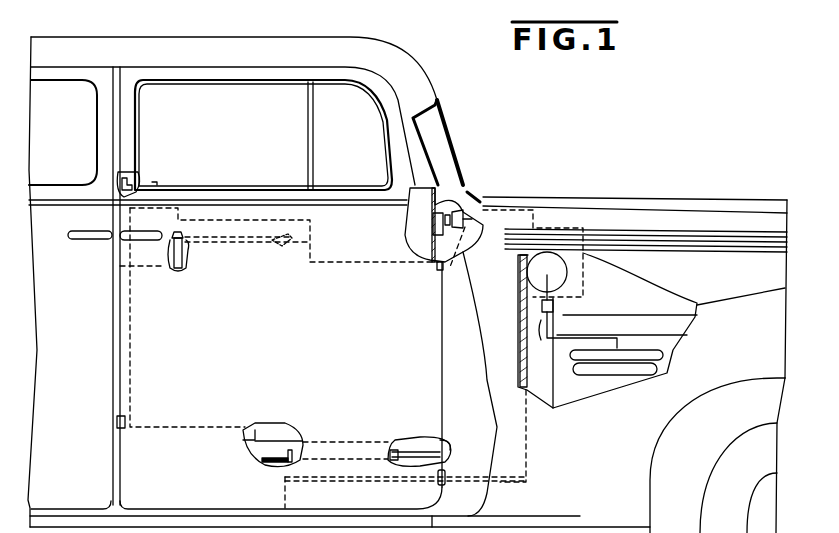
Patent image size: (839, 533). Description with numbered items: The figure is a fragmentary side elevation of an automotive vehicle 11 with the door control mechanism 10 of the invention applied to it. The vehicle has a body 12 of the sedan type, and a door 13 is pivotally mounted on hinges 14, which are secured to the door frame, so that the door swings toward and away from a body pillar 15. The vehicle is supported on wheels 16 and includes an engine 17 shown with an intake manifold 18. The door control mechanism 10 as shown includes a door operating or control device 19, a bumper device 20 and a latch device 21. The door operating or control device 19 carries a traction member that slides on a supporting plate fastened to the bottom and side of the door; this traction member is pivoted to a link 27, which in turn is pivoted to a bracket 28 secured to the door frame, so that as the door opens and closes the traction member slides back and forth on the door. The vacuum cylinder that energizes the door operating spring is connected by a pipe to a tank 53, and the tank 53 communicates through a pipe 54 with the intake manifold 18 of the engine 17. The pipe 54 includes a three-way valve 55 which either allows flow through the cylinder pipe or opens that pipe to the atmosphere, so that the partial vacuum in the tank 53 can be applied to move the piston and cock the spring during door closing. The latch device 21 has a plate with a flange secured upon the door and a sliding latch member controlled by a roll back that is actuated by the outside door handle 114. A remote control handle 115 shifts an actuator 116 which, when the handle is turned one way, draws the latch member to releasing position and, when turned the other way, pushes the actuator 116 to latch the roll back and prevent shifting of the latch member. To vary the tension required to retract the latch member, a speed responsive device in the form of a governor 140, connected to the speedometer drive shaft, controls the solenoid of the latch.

The door control mechanism 10 is at (168, 352).
The automotive vehicle 11 is at (418, 64).
The body 12 is at (583, 200).
The door 13 is at (407, 172).
The hinge 14 is at (437, 269).
The body pillar 15 is at (118, 68).
The wheel 16 is at (768, 456).
The engine 17 is at (592, 320).
The intake manifold 18 is at (648, 350).
The door operating or control device 19 is at (272, 452).
The bumper device 20 is at (132, 178).
The latch device 21 is at (188, 268).
The link 27 is at (412, 450).
The bracket 28 is at (442, 440).
The tank 53 is at (537, 271).
The pipe 54 is at (558, 325).
The three-way valve 55 is at (537, 340).
The outside door handle 114 is at (148, 241).
The remote control handle 115 is at (277, 250).
The actuator 116 is at (232, 243).
The governor 140 is at (460, 210).